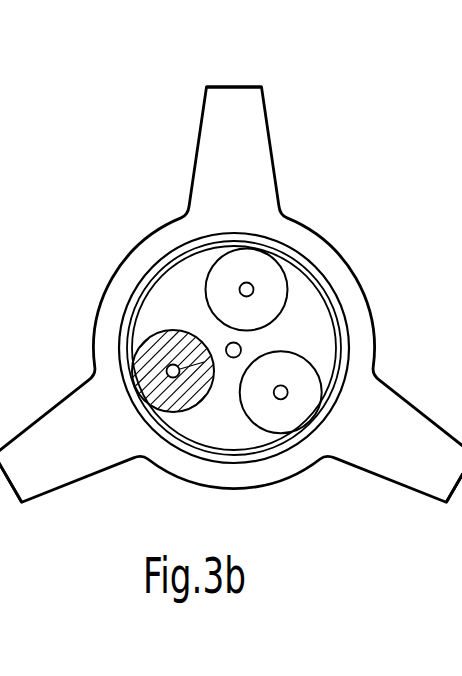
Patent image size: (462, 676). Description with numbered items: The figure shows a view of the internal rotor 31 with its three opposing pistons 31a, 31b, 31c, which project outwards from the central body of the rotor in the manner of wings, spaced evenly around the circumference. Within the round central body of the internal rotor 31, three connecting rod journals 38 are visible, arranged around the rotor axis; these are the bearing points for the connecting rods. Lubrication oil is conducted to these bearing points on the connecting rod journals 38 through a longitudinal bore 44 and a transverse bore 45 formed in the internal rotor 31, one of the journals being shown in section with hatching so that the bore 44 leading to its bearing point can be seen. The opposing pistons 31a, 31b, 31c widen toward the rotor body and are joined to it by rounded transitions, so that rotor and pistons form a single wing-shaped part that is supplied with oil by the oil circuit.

The internal rotor 31 is at (0, 70).
The opposing piston 31a is at (246, 120).
The opposing piston 31b is at (423, 480).
The opposing piston 31c is at (42, 470).
The connecting rod journal 38 is at (274, 293).
The longitudinal bore 44 is at (167, 371).
The transverse bore 45 is at (191, 361).